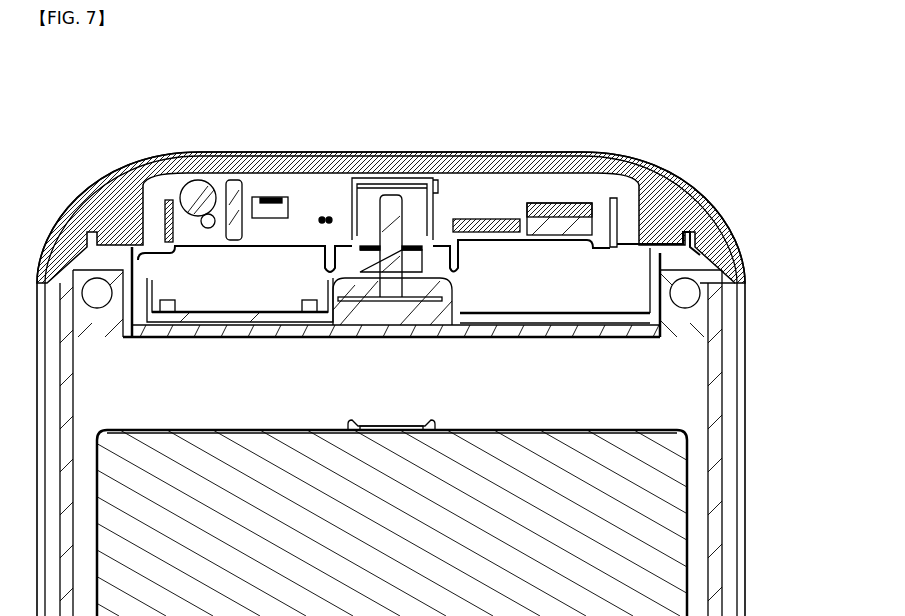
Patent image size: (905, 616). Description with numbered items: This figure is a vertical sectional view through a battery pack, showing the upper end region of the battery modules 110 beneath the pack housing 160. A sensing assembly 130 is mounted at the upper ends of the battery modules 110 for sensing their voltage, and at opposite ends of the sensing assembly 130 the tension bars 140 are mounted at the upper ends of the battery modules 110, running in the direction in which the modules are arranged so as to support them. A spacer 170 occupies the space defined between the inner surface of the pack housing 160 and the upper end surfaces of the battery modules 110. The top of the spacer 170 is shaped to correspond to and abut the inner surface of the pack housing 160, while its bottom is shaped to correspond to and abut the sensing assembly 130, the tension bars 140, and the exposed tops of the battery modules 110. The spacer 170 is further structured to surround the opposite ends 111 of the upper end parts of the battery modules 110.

The battery modules 110 is at (722, 438).
The opposite ends of the upper end parts of the battery modules 111 is at (712, 263).
The sensing assembly 130 is at (537, 208).
The tension bars 140 is at (613, 207).
The pack housing 160 is at (458, 153).
The spacer 170 is at (130, 193).